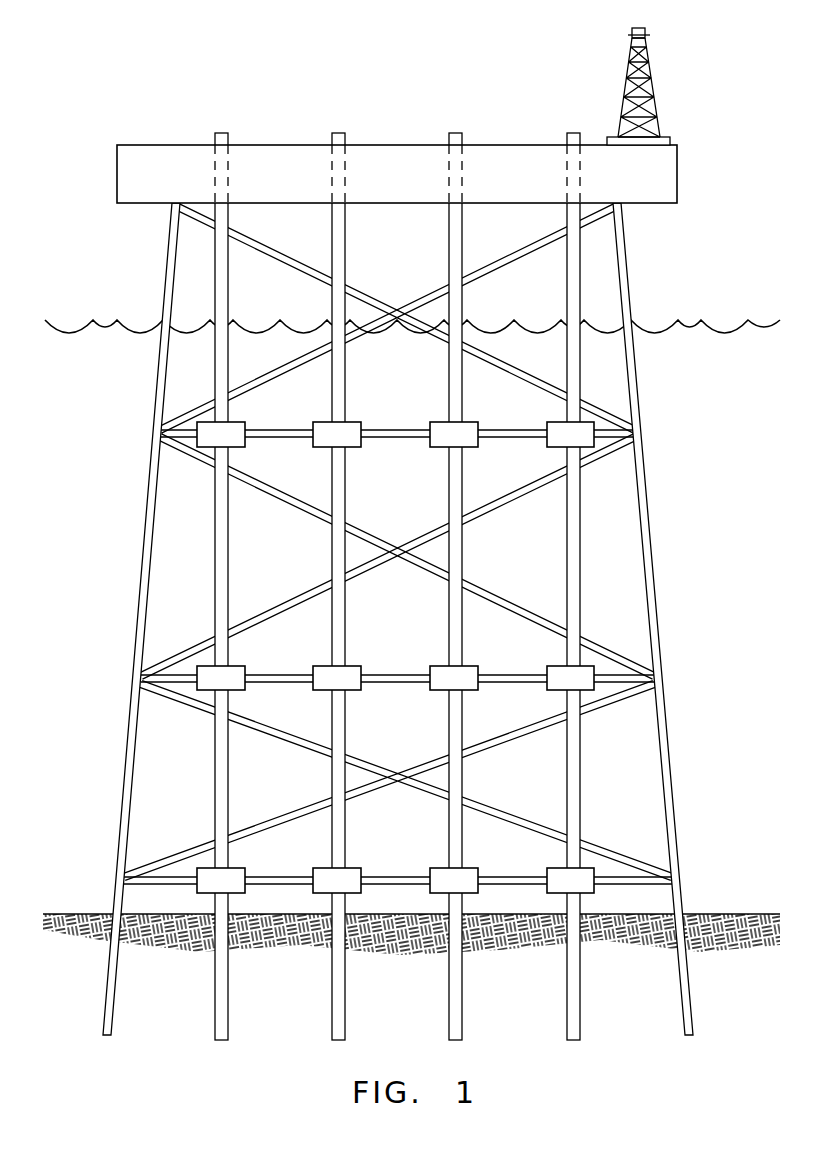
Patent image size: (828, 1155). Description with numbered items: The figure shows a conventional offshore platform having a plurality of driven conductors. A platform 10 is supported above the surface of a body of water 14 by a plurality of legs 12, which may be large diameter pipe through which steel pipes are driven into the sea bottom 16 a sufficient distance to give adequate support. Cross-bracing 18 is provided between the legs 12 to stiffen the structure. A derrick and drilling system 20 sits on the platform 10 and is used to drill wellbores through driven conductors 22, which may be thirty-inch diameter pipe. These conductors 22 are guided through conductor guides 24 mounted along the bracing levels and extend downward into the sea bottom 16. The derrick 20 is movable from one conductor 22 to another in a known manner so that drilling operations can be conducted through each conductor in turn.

The platform 10 is at (182, 158).
The legs 12 is at (627, 284).
The body of water 14 is at (693, 423).
The sea bottom 16 is at (723, 921).
The cross-bracing 18 is at (204, 455).
The derrick and drilling system 20 is at (648, 80).
The driven conductors 22 is at (572, 533).
The conductor guides 24 is at (568, 680).